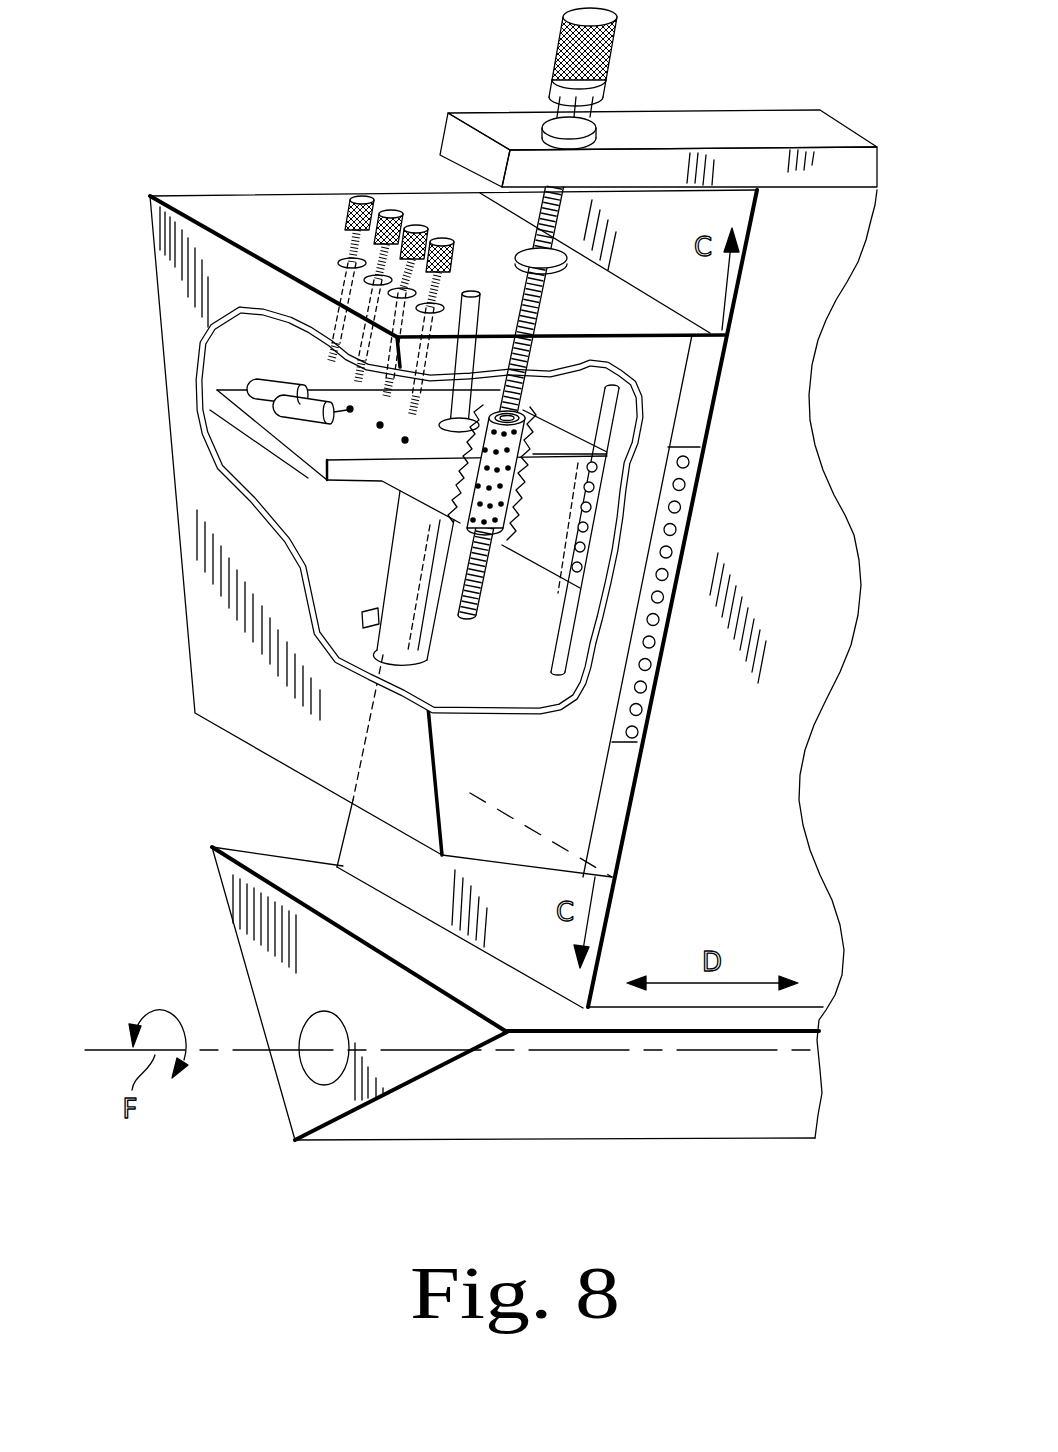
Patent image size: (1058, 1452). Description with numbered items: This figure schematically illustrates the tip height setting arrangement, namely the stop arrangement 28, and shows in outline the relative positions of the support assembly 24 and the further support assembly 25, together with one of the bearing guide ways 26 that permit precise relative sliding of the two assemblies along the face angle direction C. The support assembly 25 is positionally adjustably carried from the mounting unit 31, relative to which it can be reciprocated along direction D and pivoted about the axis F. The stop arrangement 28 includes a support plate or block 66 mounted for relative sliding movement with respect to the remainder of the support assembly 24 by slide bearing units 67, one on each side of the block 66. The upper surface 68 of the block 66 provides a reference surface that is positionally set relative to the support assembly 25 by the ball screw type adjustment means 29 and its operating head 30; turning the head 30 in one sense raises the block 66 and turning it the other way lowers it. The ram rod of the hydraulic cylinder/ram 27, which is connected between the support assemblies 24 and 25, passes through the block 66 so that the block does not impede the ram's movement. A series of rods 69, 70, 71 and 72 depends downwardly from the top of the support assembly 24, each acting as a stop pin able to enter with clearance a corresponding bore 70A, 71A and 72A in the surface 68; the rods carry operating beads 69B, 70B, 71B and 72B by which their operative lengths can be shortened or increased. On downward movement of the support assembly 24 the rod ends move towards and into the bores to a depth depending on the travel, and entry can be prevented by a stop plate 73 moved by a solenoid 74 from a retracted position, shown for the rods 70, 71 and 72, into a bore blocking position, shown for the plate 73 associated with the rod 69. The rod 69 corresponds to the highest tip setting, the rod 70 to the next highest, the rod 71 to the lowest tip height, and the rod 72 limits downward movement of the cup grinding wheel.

The support assembly 24 is at (150, 216).
The further support assembly 25 is at (808, 255).
The bearing guide ways 26 is at (662, 708).
The hydraulic cylinder/ram 27 is at (418, 642).
The stop arrangement 28 is at (308, 256).
The ball screw type adjustment means 29 is at (480, 603).
The operating head 30 is at (566, 46).
The mounting unit 31 is at (558, 1169).
The support plate or block 66 is at (543, 530).
The slide bearing units 67 is at (553, 656).
The upper surface of the block 68 is at (564, 436).
The rod 69 is at (344, 262).
The operating bead 69B is at (360, 198).
The rod 70 is at (364, 279).
The bore 70A is at (346, 409).
The operating bead 70B is at (391, 212).
The rod 71 is at (388, 292).
The bore 71A is at (377, 426).
The operating bead 71B is at (416, 227).
The rod 72 is at (416, 308).
The bore 72A is at (403, 441).
The operating bead 72B is at (447, 242).
The stop plate 73 is at (326, 398).
The solenoid 74 is at (213, 390).